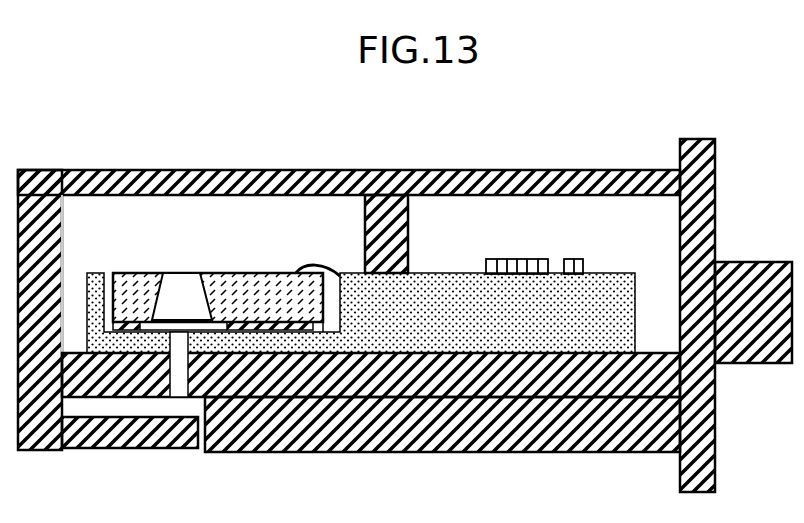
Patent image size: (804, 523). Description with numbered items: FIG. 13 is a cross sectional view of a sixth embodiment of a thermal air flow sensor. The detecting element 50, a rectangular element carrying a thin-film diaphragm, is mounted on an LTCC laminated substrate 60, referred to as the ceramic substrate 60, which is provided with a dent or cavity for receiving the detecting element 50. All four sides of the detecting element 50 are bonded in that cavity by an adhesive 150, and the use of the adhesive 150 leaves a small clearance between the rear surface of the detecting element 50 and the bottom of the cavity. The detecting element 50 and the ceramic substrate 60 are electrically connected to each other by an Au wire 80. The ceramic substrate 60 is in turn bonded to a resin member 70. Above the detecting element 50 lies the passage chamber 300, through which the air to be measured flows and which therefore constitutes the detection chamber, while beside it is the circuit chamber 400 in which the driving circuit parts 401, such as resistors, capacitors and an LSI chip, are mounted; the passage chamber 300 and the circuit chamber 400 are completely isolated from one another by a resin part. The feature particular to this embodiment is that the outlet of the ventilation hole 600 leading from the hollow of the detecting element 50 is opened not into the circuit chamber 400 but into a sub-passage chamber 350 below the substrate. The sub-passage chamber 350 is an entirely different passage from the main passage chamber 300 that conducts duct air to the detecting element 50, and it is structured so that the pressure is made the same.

The passage chamber 300 is at (125, 218).
The detecting element 50 is at (216, 283).
The Au wire 80 is at (300, 265).
The circuit chamber 400 is at (445, 220).
The driving circuit parts 401 is at (532, 259).
The sub-passage chamber 350 is at (80, 408).
The ventilation hole 600 is at (177, 373).
The adhesive 150 is at (278, 333).
The LTCC laminated substrate 60 is at (463, 325).
The resin member 70 is at (640, 388).